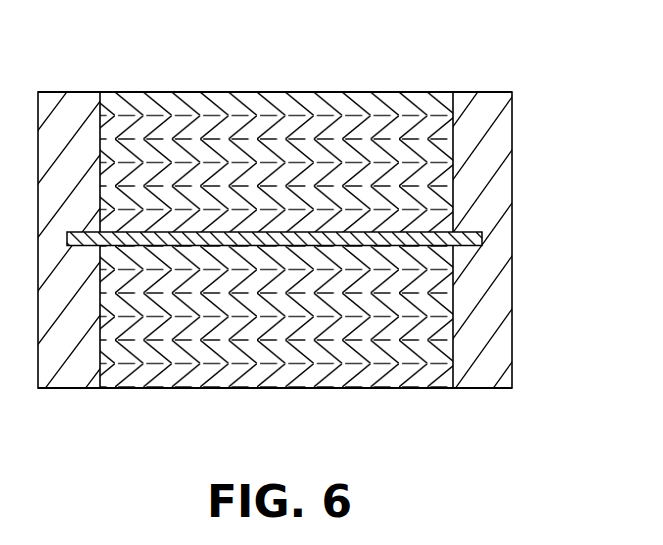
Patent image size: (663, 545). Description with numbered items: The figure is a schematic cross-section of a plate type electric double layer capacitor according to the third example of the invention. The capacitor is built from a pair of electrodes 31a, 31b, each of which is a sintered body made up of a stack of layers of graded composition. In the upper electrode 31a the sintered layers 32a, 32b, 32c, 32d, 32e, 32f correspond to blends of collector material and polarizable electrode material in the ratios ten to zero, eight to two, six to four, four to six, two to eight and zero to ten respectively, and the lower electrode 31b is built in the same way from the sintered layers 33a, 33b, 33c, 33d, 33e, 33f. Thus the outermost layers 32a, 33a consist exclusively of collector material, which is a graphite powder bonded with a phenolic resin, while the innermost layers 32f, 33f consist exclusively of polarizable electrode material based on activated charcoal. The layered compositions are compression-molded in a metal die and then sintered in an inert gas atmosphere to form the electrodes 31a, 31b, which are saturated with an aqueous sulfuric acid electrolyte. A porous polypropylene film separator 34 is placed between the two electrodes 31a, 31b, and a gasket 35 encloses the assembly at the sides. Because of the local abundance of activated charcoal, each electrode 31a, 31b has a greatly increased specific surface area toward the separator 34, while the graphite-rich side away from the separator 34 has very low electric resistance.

The electrode 31a is at (291, 92).
The electrode 31b is at (320, 393).
The sintered layer 32a is at (425, 104).
The sintered layer 32b is at (442, 120).
The sintered layer 32c is at (442, 148).
The sintered layer 32d is at (442, 175).
The sintered layer 32e is at (442, 197).
The sintered layer 32f is at (442, 222).
The sintered layer 33a is at (441, 383).
The sintered layer 33b is at (443, 362).
The sintered layer 33c is at (443, 342).
The sintered layer 33d is at (443, 315).
The sintered layer 33e is at (443, 285).
The sintered layer 33f is at (443, 255).
The separator 34 is at (352, 232).
The gasket 35 is at (78, 104).